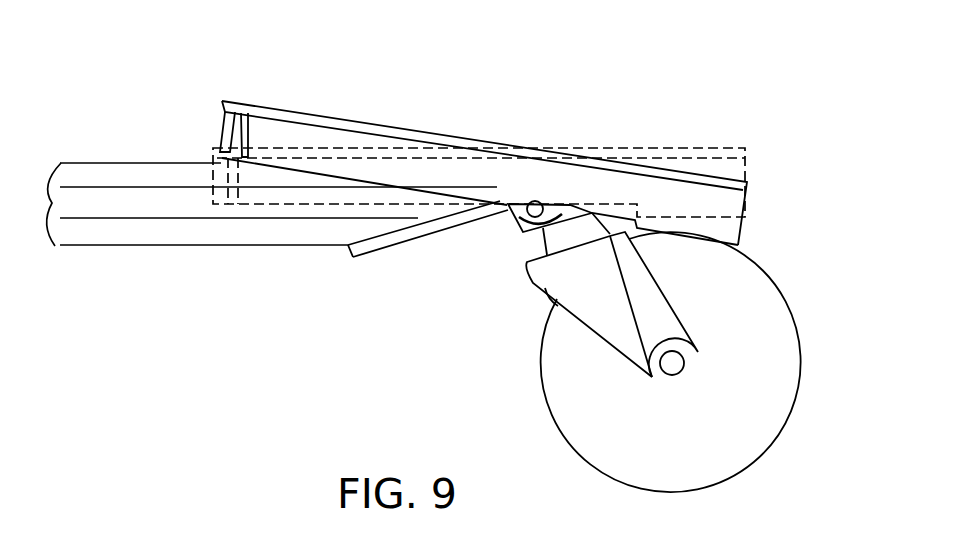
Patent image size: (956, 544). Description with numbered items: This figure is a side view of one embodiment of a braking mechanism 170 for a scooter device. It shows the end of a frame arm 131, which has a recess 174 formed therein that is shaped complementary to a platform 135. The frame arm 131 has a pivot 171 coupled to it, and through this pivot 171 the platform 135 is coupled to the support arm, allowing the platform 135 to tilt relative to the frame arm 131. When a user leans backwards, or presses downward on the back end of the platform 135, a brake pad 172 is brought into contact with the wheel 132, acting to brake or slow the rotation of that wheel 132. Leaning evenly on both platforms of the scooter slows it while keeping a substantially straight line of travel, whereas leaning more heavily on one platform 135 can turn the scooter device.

The frame arm 131 is at (134, 122).
The wheel 132 is at (740, 292).
The platform 135 is at (345, 120).
The braking mechanism 170 is at (572, 81).
The pivot 171 is at (520, 214).
The brake pad 172 is at (737, 245).
The recess 174 is at (265, 205).